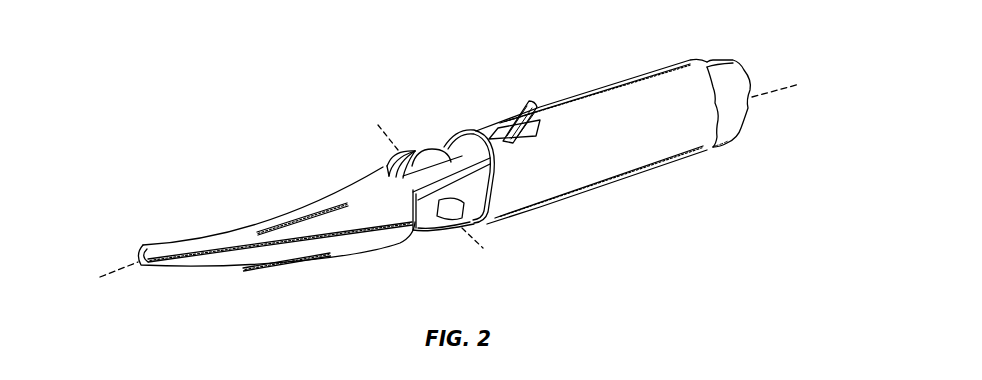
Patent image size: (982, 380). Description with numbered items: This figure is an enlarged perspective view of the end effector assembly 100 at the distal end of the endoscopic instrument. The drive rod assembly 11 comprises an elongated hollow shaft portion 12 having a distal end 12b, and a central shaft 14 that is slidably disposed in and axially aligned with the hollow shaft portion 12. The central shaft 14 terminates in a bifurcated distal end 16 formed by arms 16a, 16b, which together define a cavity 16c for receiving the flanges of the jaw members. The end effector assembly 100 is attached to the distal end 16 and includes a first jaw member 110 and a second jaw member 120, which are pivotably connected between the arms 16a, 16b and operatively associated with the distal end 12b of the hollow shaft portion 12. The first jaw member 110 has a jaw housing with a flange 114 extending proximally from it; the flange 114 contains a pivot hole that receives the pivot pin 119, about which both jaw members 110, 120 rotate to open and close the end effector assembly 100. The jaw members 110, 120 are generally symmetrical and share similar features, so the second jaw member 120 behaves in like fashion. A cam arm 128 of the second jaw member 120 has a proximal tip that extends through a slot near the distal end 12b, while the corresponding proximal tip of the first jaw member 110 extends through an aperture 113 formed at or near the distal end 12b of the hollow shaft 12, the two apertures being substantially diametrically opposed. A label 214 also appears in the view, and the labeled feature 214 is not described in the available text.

The end effector assembly 100 is at (343, 58).
The drive rod assembly 11 is at (641, 60).
The elongated hollow shaft portion 12 is at (612, 85).
The distal end 12b is at (541, 208).
The central shaft 14 is at (715, 61).
The bifurcated distal end 16 is at (443, 137).
The arm 16a is at (434, 233).
The arm 16b is at (392, 160).
The cavity 16c is at (413, 232).
The first jaw member 110 is at (270, 225).
The aperture 113 is at (503, 133).
The flange 114 is at (438, 166).
The pivot pin 119 is at (458, 210).
The second jaw member 120 is at (273, 266).
The cam arm 128 is at (527, 100).
The blade proximal portion 214 is at (415, 156).